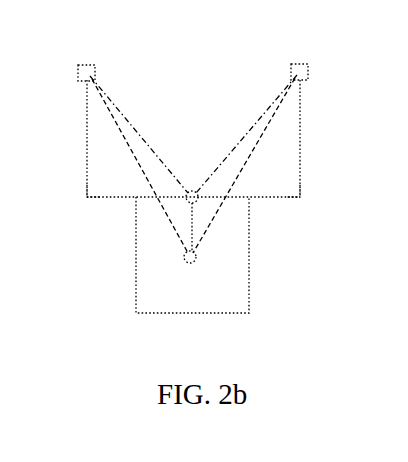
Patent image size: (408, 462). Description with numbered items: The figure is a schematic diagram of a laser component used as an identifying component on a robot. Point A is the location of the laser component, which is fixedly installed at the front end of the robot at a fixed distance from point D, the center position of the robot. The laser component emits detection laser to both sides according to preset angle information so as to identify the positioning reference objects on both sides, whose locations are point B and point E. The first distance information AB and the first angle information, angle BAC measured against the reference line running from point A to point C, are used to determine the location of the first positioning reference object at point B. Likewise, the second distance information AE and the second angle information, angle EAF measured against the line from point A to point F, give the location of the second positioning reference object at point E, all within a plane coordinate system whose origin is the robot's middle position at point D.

The point A is at (196, 189).
The point B is at (75, 64).
The point C is at (83, 196).
The point D is at (199, 257).
The point E is at (308, 63).
The point F is at (299, 195).